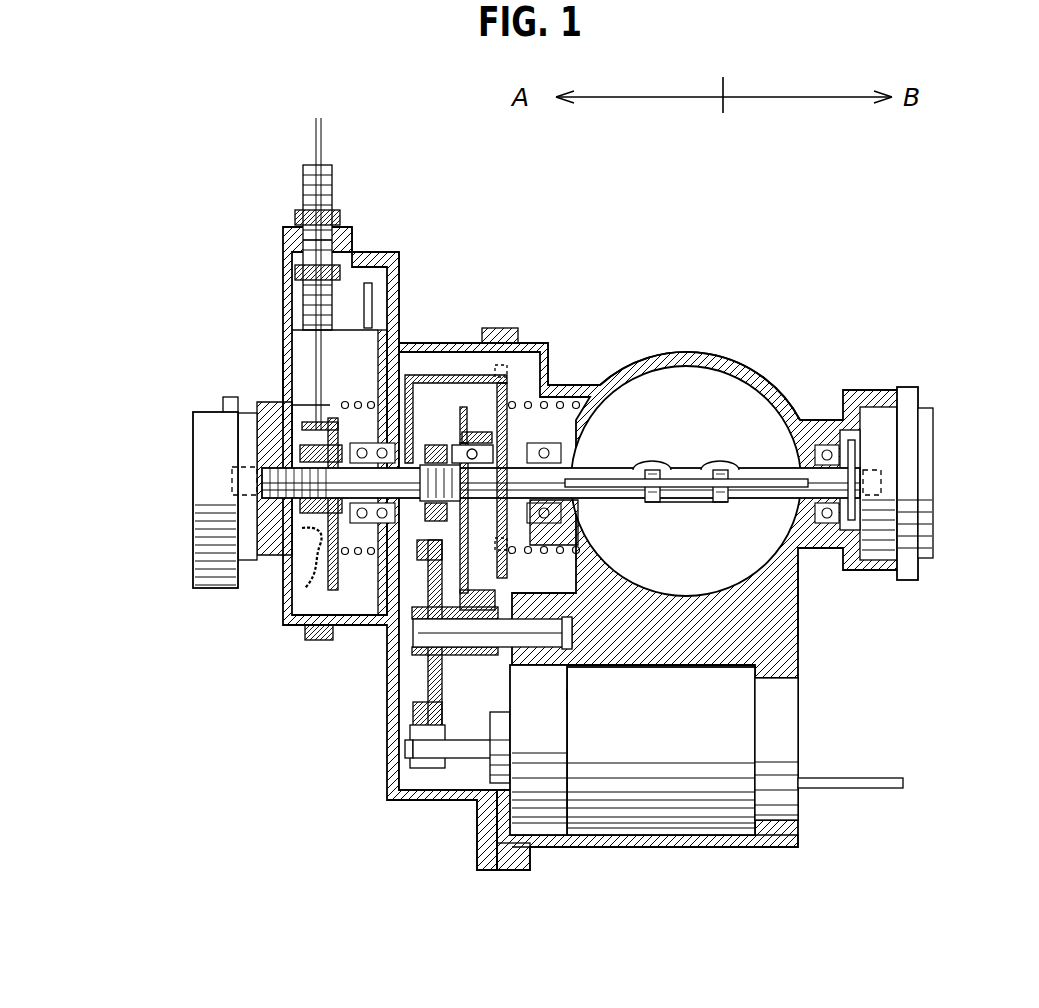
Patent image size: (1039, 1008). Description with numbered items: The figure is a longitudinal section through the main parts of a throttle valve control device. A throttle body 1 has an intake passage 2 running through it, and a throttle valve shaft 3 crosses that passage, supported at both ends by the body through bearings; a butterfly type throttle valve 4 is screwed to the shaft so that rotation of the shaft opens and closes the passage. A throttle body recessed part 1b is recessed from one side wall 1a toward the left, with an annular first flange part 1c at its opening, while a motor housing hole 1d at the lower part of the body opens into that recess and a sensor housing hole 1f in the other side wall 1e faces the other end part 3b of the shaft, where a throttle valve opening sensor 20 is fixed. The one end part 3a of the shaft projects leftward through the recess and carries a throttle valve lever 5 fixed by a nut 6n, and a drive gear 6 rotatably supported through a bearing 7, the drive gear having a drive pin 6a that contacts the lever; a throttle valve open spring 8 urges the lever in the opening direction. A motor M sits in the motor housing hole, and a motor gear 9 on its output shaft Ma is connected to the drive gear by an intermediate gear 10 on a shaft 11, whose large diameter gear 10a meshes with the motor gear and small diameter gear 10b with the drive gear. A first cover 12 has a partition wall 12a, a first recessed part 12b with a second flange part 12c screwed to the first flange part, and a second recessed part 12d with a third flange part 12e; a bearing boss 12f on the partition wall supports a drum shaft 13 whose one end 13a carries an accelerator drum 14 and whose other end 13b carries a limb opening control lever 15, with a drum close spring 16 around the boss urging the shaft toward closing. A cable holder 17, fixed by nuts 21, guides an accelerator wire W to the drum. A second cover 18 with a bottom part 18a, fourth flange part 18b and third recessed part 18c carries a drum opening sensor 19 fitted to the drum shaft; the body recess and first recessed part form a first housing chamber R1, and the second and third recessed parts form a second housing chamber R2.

The throttle body 1 is at (698, 358).
The one side wall 1a is at (578, 383).
The throttle body recessed part 1b is at (515, 855).
The first flange part 1c is at (500, 328).
The motor housing hole 1d is at (612, 837).
The another side wall 1e is at (800, 580).
The sensor housing hole 1f is at (890, 395).
The intake passage 2 is at (718, 380).
The throttle valve shaft 3 is at (686, 468).
The one end part of the throttle valve shaft 3a is at (570, 470).
The another end part of the throttle valve shaft 3b is at (840, 440).
The throttle valve 4 is at (690, 502).
The throttle valve lever 5 is at (507, 405).
The drive gear 6 is at (488, 568).
The drive pin 6a is at (580, 525).
The nut 6n is at (430, 445).
The bearing 7 is at (466, 432).
The throttle valve open spring 8 is at (556, 400).
The motor gear 9 is at (420, 768).
The intermediate gear 10 is at (410, 725).
The large diameter gear 10a is at (410, 742).
The small diameter gear 10b is at (465, 647).
The shaft 11 is at (540, 665).
The first cover 12 is at (400, 250).
The partition wall 12a is at (480, 343).
The first recessed part 12b is at (440, 352).
The second flange part 12c is at (488, 870).
The second recessed part 12d is at (400, 275).
The third flange part 12e is at (352, 240).
The bearing boss 12f is at (357, 400).
The drum shaft 13 is at (270, 420).
The one end of the drum shaft 13a is at (189, 376).
The another end of the drum shaft 13b is at (372, 553).
The accelerator drum 14 is at (280, 590).
The limb opening control lever 15 is at (470, 375).
The drum close spring 16 is at (370, 372).
The cable holder 17 is at (303, 190).
The second cover 18 is at (258, 560).
The bottom part 18a is at (283, 360).
The fourth flange part 18b is at (312, 640).
The third recessed part 18c is at (292, 340).
The drum opening sensor 19 is at (193, 480).
The throttle valve opening sensor 20 is at (935, 455).
The nut 21 is at (295, 216).
The accelerator wire W is at (316, 125).
The motor M is at (735, 751).
The output shaft Ma is at (470, 758).
The first housing chamber R1 is at (597, 705).
The second housing chamber R2 is at (340, 305).